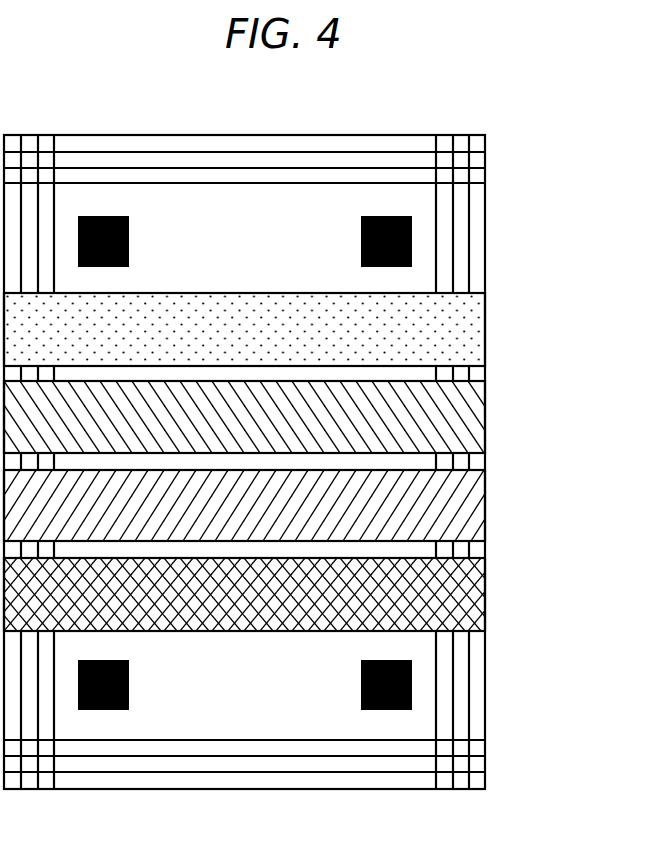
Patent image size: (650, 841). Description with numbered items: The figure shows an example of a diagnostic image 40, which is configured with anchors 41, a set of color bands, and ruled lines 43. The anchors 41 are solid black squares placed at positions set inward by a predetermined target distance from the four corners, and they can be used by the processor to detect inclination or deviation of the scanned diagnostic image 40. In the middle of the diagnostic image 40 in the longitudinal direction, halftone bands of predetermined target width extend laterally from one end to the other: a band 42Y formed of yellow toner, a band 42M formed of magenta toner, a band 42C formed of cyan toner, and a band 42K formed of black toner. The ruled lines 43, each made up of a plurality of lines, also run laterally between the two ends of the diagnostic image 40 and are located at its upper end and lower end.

The diagnostic image 40 is at (245, 134).
The anchor 41 is at (130, 238).
The band (yellow) 42Y is at (505, 293).
The band (magenta) 42M is at (505, 381).
The band (cyan) 42C is at (505, 470).
The band (black) 42K is at (505, 558).
The ruled line 43 is at (505, 135).